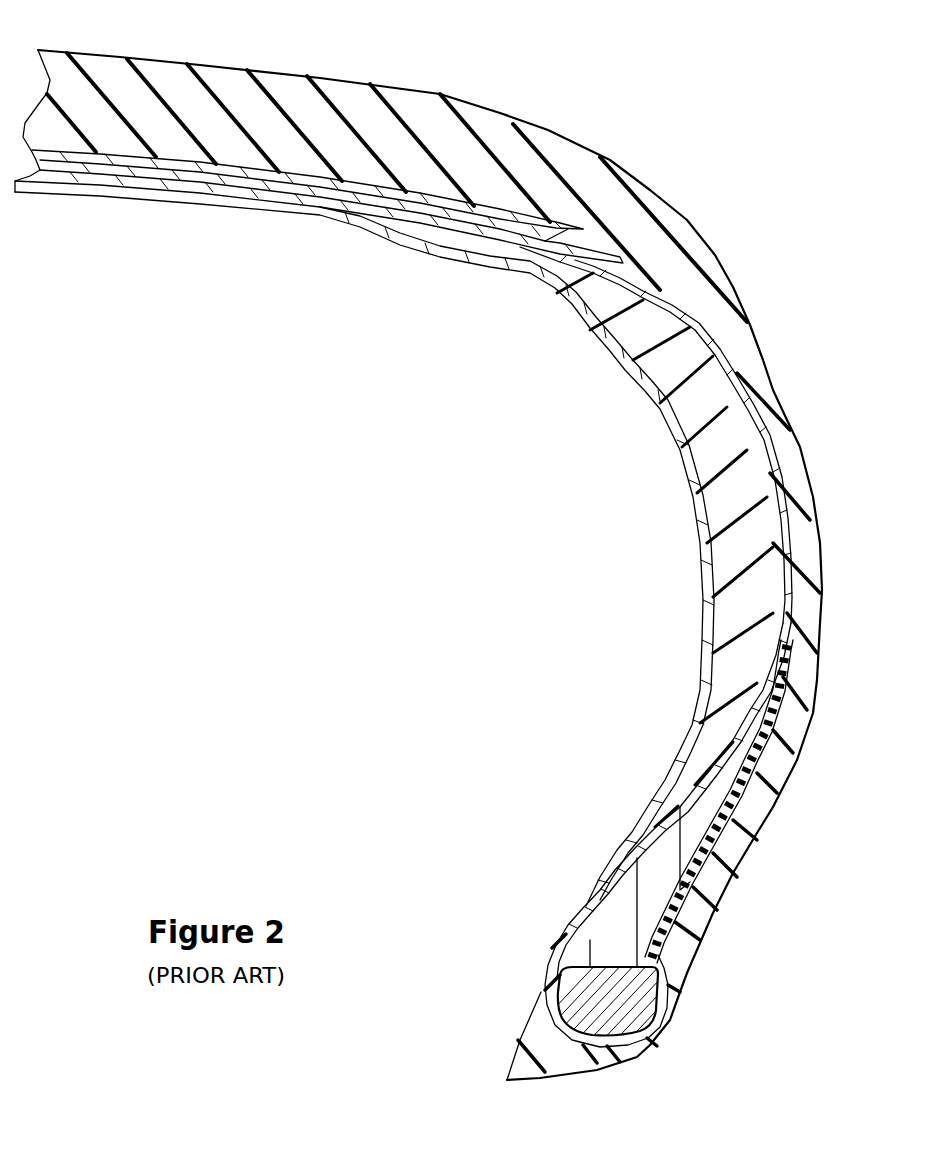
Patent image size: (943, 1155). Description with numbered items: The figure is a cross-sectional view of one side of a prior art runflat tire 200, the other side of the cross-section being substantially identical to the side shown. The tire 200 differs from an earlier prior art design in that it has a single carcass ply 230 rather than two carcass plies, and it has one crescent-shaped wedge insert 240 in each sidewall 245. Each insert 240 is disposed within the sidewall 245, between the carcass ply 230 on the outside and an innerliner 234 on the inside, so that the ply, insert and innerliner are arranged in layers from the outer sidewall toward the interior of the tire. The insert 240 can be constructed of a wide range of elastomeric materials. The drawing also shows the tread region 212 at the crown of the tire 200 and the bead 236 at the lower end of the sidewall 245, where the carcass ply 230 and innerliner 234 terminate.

The runflat tire 200 is at (553, 85).
The tread 212 is at (170, 58).
The innerliner 234 is at (580, 320).
The carcass ply 230 is at (727, 373).
The crescent-shaped wedge insert 240 is at (733, 547).
The sidewall 245 is at (790, 430).
The bead core 236 is at (613, 1003).